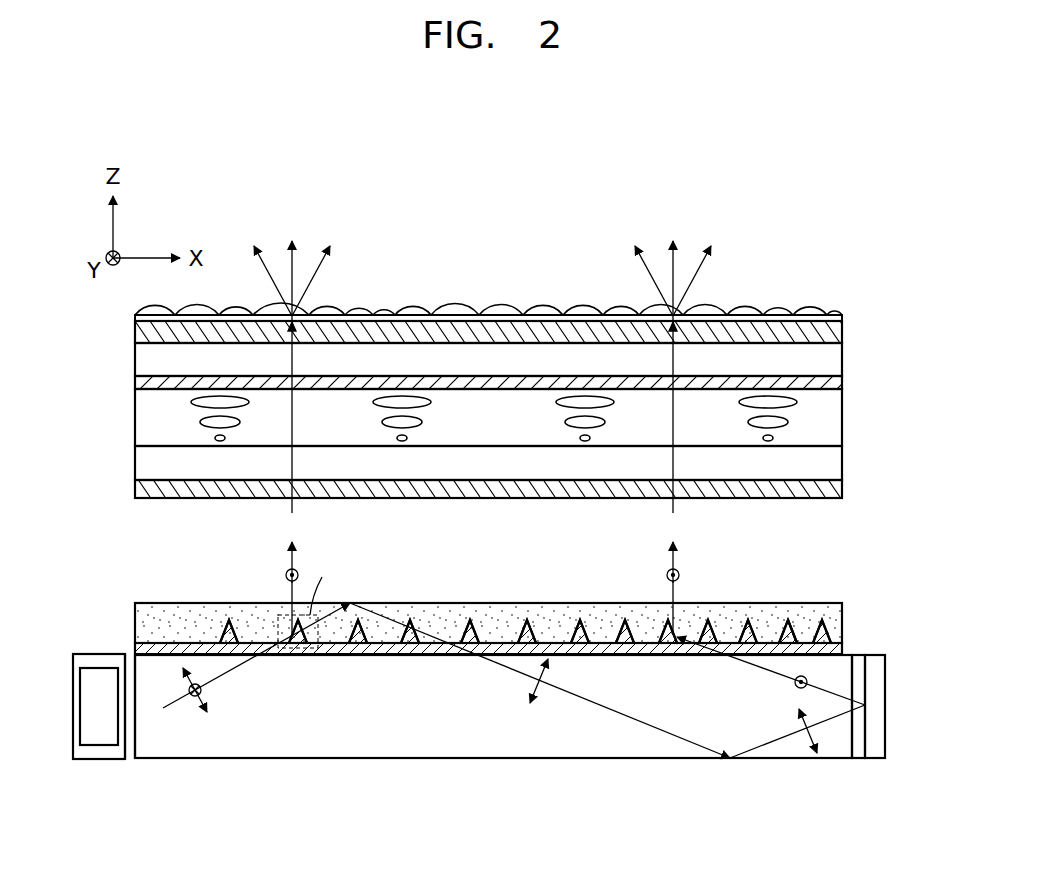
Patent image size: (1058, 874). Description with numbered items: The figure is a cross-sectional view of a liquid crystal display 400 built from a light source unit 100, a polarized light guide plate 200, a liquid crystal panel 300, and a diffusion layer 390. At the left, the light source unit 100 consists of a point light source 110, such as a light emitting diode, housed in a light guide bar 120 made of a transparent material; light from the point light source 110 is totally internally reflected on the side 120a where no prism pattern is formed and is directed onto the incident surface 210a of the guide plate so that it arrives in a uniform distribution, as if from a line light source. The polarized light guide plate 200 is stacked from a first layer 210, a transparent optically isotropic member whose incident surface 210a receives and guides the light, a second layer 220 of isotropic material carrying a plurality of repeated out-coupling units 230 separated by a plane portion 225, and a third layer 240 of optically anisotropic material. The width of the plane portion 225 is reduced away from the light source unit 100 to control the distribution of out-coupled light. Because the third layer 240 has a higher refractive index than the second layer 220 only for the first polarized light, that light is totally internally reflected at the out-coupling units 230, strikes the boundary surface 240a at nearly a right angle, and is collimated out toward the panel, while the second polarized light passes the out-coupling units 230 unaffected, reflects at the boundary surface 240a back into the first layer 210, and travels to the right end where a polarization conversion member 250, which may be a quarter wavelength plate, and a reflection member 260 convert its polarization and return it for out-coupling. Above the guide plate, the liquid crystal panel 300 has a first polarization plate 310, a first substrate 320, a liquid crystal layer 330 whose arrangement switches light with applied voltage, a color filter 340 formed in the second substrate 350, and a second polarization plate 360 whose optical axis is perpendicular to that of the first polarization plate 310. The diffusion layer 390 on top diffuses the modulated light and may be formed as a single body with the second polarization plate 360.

The light source unit 100 is at (135, 817).
The point light source 110 is at (85, 738).
The light guide bar 120 is at (112, 752).
The side of the light guide bar 120a is at (133, 672).
The polarized light guide plate 200 is at (124, 574).
The first layer 210 is at (535, 747).
The incident surface 210a is at (133, 758).
The second layer 220 is at (840, 648).
The plane portion 225 is at (805, 638).
The out-coupling units 230 is at (758, 618).
The third layer 240 is at (837, 615).
The boundary surface 240a is at (828, 603).
The polarization conversion member 250 is at (857, 752).
The reflection member 260 is at (880, 752).
The liquid crystal panel 300 is at (913, 332).
The first polarization plate 310 is at (840, 490).
The first substrate 320 is at (840, 462).
The liquid crystal layer 330 is at (840, 421).
The color filter 340 is at (840, 385).
The second substrate 350 is at (840, 362).
The second polarization plate 360 is at (840, 338).
The diffusion layer 390 is at (842, 318).
The liquid crystal display 400 is at (835, 268).